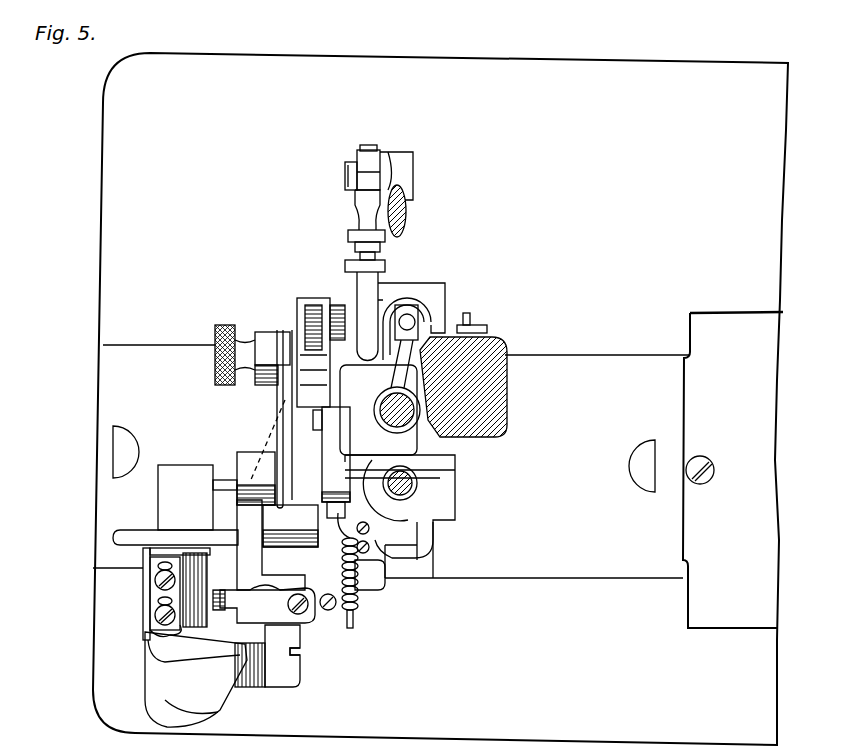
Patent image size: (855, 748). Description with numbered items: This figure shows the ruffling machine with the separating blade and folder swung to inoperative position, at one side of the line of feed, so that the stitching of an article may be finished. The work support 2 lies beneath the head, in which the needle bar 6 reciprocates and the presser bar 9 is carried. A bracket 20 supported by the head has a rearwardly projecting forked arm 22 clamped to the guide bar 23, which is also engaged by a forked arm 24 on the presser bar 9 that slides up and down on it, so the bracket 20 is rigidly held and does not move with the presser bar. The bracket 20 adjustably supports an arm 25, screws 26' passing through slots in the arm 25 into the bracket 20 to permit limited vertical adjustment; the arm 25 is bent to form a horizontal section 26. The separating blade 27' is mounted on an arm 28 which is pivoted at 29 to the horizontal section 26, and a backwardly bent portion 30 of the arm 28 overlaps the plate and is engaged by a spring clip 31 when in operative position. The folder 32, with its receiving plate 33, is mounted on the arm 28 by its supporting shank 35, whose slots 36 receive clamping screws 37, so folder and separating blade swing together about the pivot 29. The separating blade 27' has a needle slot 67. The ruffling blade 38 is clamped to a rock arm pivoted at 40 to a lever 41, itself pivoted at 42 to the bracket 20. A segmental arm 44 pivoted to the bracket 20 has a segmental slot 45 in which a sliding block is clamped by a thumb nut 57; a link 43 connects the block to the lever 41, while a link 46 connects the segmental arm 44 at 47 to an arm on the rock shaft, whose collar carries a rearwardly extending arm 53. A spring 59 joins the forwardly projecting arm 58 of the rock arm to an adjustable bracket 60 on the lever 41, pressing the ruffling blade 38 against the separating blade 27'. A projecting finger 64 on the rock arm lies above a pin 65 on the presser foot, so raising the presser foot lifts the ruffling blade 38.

The work support 2 is at (437, 73).
The connection of link to arm 47 is at (345, 181).
The rearwardly extending arm 53 is at (408, 224).
The link 46 is at (348, 239).
The rearwardly projecting forked arm 22 is at (383, 296).
The guide bar 23 is at (415, 323).
The forked arm 24 is at (470, 392).
The presser bar 9 is at (420, 410).
The arm 25 is at (345, 410).
The segmental arm 44 is at (312, 299).
The segmental slot 45 is at (305, 318).
The thumb nut 57 is at (215, 336).
The link 43 is at (283, 396).
The bracket 20 is at (310, 437).
The pivot of lever 42 is at (240, 462).
The screws 26' is at (342, 462).
The backwardly bent portion 30 is at (177, 470).
The horizontal section 26 is at (256, 585).
The arm 28 is at (157, 535).
The supporting shank 35 is at (148, 573).
The slots 36 is at (163, 577).
The screws 37 is at (162, 607).
The separating blade 27' is at (257, 613).
The lever 41 is at (325, 566).
The spring clip 31 is at (222, 612).
The projecting finger 64 is at (430, 470).
The needle bar 6 is at (418, 486).
The pin 65 is at (369, 530).
The adjustable bracket 60 is at (370, 548).
The ruffling blade 38 is at (423, 526).
The pivot 29 is at (387, 557).
The pivot of rock arm 40 is at (385, 578).
The spring 59 is at (360, 604).
The forwardly projecting arm 58 is at (353, 625).
The needle slot 67 is at (300, 652).
The folder 32 is at (165, 662).
The receiving plate 33 is at (200, 718).